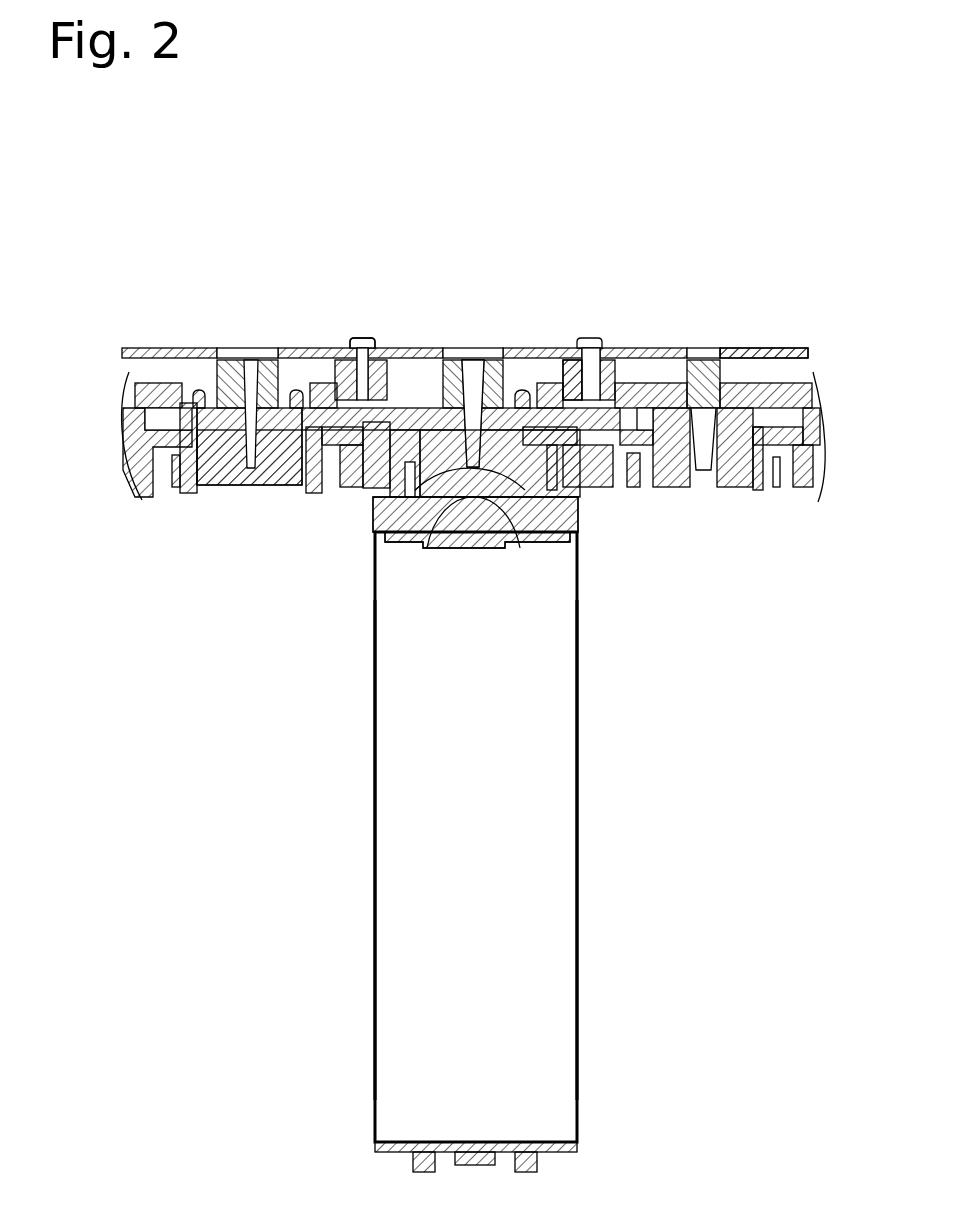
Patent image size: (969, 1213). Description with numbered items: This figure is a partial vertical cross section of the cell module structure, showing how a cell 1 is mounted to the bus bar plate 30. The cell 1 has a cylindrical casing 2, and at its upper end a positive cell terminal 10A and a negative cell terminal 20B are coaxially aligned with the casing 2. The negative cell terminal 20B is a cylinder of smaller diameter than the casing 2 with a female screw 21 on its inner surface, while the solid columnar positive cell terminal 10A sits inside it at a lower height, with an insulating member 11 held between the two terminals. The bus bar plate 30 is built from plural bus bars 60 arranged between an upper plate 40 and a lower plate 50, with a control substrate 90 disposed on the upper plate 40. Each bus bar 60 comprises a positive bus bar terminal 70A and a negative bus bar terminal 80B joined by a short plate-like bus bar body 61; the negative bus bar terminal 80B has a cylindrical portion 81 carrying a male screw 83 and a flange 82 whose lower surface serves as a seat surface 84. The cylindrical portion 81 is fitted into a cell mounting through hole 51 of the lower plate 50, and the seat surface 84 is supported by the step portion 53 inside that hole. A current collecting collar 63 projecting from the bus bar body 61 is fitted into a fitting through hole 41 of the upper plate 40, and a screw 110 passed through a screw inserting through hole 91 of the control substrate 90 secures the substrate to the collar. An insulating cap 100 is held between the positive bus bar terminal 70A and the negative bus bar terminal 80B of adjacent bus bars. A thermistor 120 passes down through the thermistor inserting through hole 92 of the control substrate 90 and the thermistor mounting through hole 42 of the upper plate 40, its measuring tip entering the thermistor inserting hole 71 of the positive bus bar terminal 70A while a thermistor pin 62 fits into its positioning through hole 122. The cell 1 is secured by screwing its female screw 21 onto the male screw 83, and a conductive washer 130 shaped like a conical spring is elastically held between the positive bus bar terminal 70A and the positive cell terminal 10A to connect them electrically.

The cell 1 is at (580, 820).
The casing 2 is at (578, 957).
The positive cell terminal 10A is at (483, 557).
The insulating member 11 is at (520, 560).
The negative cell terminal 20B is at (365, 495).
The female screw 21 is at (449, 552).
The bus bar plate 30 is at (183, 303).
The upper plate 40 is at (757, 348).
The fitting through hole 41 is at (622, 383).
The thermistor mounting through hole 42 is at (540, 383).
The lower plate 50 is at (805, 495).
The cell mounting through hole 51 is at (378, 520).
The step portion 53 is at (562, 348).
The bus bar 60 is at (735, 502).
The bus bar body 61 is at (318, 383).
The thermistor pin 62 is at (182, 383).
The current collecting collar 63 is at (424, 360).
The positive bus bar terminal 70A is at (218, 488).
The thermistor inserting hole 71 is at (455, 360).
The negative bus bar terminal 80B is at (310, 492).
The cylindrical portion 81 is at (650, 490).
The flange 82 is at (593, 338).
The male screw 83 is at (165, 492).
The seat surface 84 is at (607, 490).
The control substrate 90 is at (795, 348).
The screw inserting through hole 91 is at (365, 338).
The thermistor inserting through hole 92 is at (233, 383).
The insulating cap 100 is at (195, 492).
The screw 110 is at (353, 338).
The thermistor 120 is at (250, 348).
The positioning through hole 122 is at (294, 383).
The conductive washer 130 is at (468, 552).